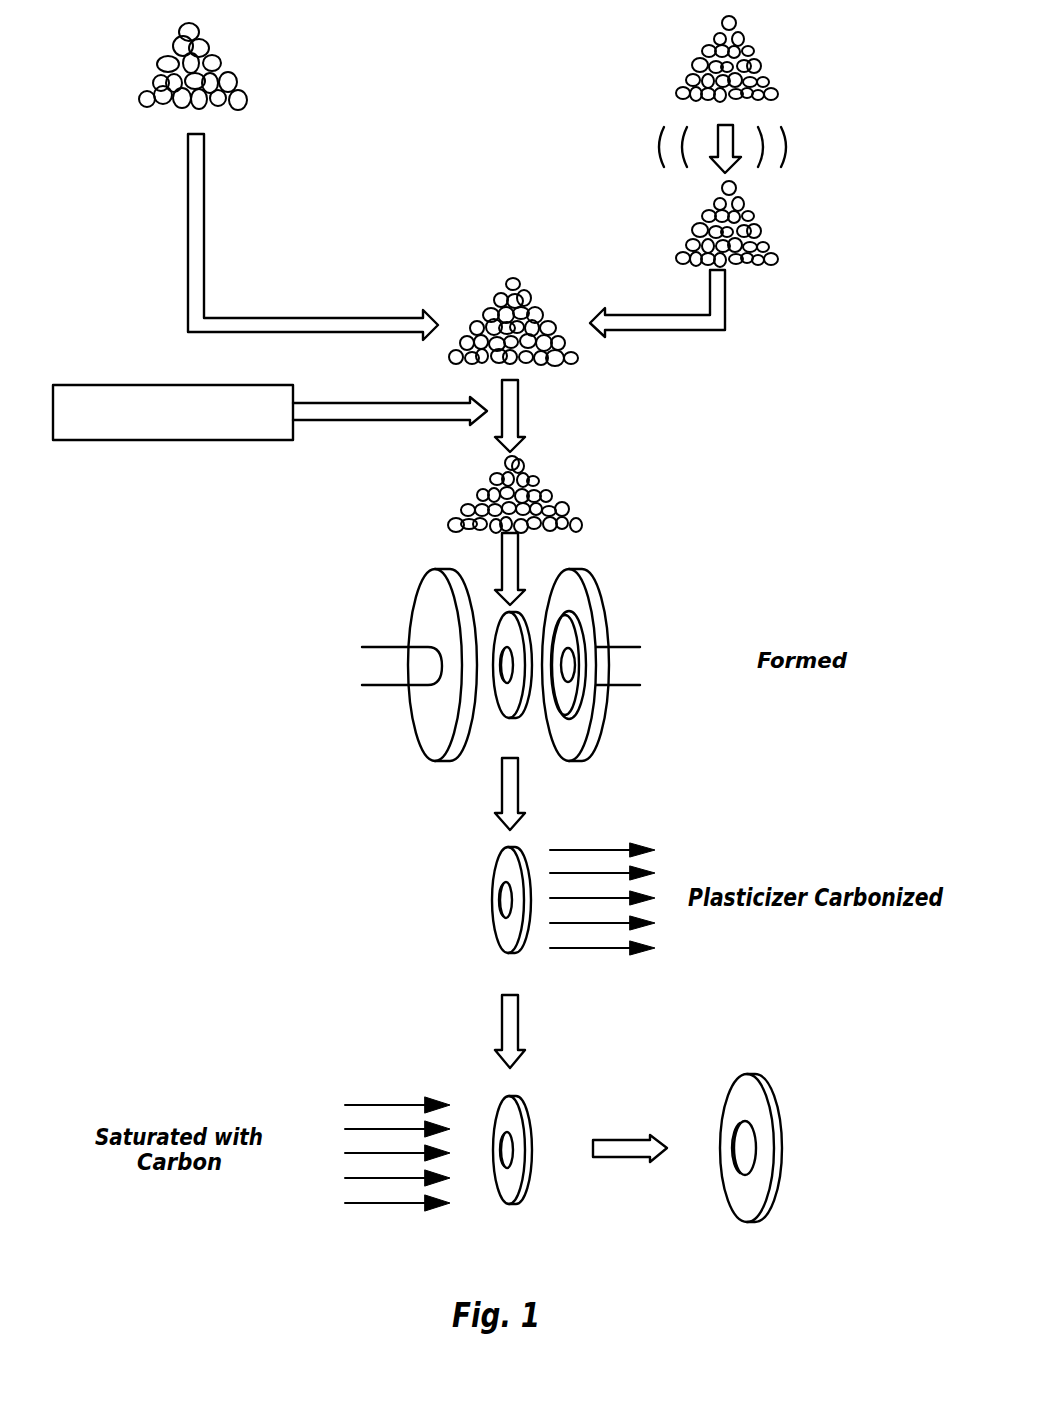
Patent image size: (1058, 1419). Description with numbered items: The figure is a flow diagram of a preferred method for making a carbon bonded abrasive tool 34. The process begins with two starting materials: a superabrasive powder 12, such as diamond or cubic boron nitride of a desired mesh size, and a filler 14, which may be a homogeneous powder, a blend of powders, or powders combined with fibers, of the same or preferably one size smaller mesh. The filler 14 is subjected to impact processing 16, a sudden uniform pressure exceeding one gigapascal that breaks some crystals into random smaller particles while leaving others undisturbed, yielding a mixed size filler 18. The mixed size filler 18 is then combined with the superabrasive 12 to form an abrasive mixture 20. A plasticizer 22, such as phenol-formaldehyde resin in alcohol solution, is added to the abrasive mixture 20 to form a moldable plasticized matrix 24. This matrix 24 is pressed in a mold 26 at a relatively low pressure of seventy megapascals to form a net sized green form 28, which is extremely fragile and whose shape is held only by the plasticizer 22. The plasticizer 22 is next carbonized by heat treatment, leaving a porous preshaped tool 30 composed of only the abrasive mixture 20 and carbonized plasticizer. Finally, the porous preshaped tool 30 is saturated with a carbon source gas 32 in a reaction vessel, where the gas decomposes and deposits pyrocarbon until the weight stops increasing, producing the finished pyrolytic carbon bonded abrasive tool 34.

The superabrasive powder 12 is at (215, 67).
The filler 14 is at (763, 70).
The impact processing 16 is at (788, 145).
The mixed size filler 18 is at (763, 232).
The abrasive mixture 20 is at (515, 280).
The plasticizer 22 is at (190, 440).
The plasticized matrix 24 is at (558, 485).
The mold 26 is at (530, 660).
The green form 28 is at (507, 717).
The porous preshaped tool 30 is at (530, 1110).
The carbon source gas 32 is at (385, 1105).
The carbon bonded abrasive tool 34 is at (728, 1090).